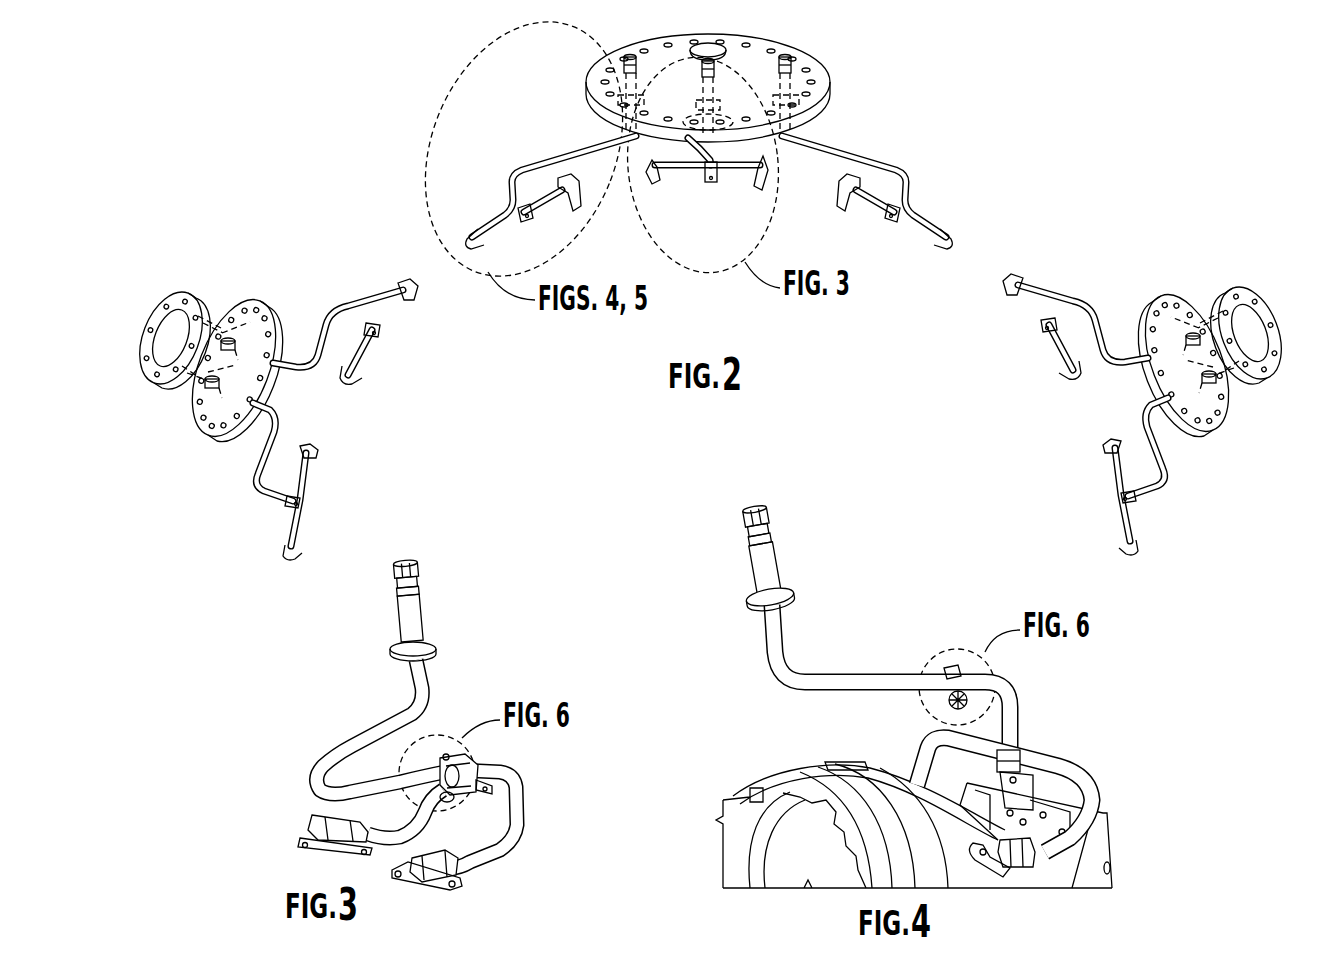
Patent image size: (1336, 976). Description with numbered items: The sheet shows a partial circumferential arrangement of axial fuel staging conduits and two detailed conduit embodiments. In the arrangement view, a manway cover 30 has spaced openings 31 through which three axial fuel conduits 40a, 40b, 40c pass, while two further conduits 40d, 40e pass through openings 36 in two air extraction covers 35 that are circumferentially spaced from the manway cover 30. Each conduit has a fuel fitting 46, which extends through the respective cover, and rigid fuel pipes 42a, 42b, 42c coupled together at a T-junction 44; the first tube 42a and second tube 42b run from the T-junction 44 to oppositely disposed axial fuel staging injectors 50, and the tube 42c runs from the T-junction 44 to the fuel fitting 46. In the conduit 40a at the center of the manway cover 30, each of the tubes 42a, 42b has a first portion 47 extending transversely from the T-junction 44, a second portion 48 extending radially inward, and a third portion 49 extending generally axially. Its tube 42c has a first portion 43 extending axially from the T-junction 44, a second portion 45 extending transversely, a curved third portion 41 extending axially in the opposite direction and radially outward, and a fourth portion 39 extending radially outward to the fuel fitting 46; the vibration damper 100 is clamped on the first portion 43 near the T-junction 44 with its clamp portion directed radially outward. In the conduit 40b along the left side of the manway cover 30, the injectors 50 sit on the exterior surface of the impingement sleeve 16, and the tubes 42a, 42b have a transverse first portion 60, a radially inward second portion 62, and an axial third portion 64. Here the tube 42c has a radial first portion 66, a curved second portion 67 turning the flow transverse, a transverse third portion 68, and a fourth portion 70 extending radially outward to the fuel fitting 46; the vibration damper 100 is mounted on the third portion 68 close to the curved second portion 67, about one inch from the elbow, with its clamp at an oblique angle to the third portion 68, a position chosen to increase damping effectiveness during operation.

In FIG. 4, the impingement sleeve 16 is at (963, 870).
In FIG. 2, the manway cover 30 is at (828, 84).
In FIG. 2, the openings 31 is at (622, 68).
In FIG. 2, the air extraction cover 35 is at (202, 425).
In FIG. 2, the openings 36 is at (248, 304).
In FIG. 3, the fourth portion 39 is at (410, 685).
In FIG. 2, the axial fuel staging conduit 40a is at (661, 190).
In FIG. 3, the axial fuel staging conduit 40a is at (431, 745).
In FIG. 2, the axial fuel staging conduit 40b is at (478, 170).
In FIG. 4, the axial fuel staging conduit 40b is at (929, 711).
In FIG. 2, the axial fuel conduit 40c is at (935, 172).
In FIG. 2, the axial fuel conduit 40d is at (305, 315).
In FIG. 2, the axial fuel conduit 40e is at (255, 556).
In FIG. 3, the curved third portion 41 is at (372, 734).
In FIG. 3, the first tube 42a is at (524, 852).
In FIG. 4, the first tube 42a is at (1100, 788).
In FIG. 3, the second tube 42b is at (385, 825).
In FIG. 4, the second tube 42b is at (912, 735).
In FIG. 3, the tube 42c is at (444, 690).
In FIG. 4, the tube 42c is at (770, 668).
In FIG. 3, the first portion 43 is at (434, 800).
In FIG. 3, the T-junction 44 is at (474, 762).
In FIG. 4, the T-junction 44 is at (1020, 752).
In FIG. 3, the second portion 45 is at (345, 784).
In FIG. 3, the fuel fitting 46 is at (421, 607).
In FIG. 4, the fuel fitting 46 is at (768, 557).
In FIG. 3, the first portion 47 is at (510, 772).
In FIG. 3, the second portion 48 is at (522, 832).
In FIG. 3, the third portion 49 is at (505, 864).
In FIG. 3, the axial fuel staging injector 50 is at (445, 892).
In FIG. 4, the axial fuel staging injector 50 is at (1025, 870).
In FIG. 4, the first portion 60 is at (1055, 764).
In FIG. 4, the second portion 62 is at (1100, 820).
In FIG. 4, the third portion 64 is at (1112, 868).
In FIG. 4, the first portion 66 is at (1019, 722).
In FIG. 4, the curved second portion 67 is at (1003, 695).
In FIG. 4, the third portion 68 is at (877, 680).
In FIG. 4, the fourth portion 70 is at (780, 642).
In FIG. 3, the vibration damper 100 is at (458, 800).
In FIG. 4, the vibration damper 100 is at (943, 664).